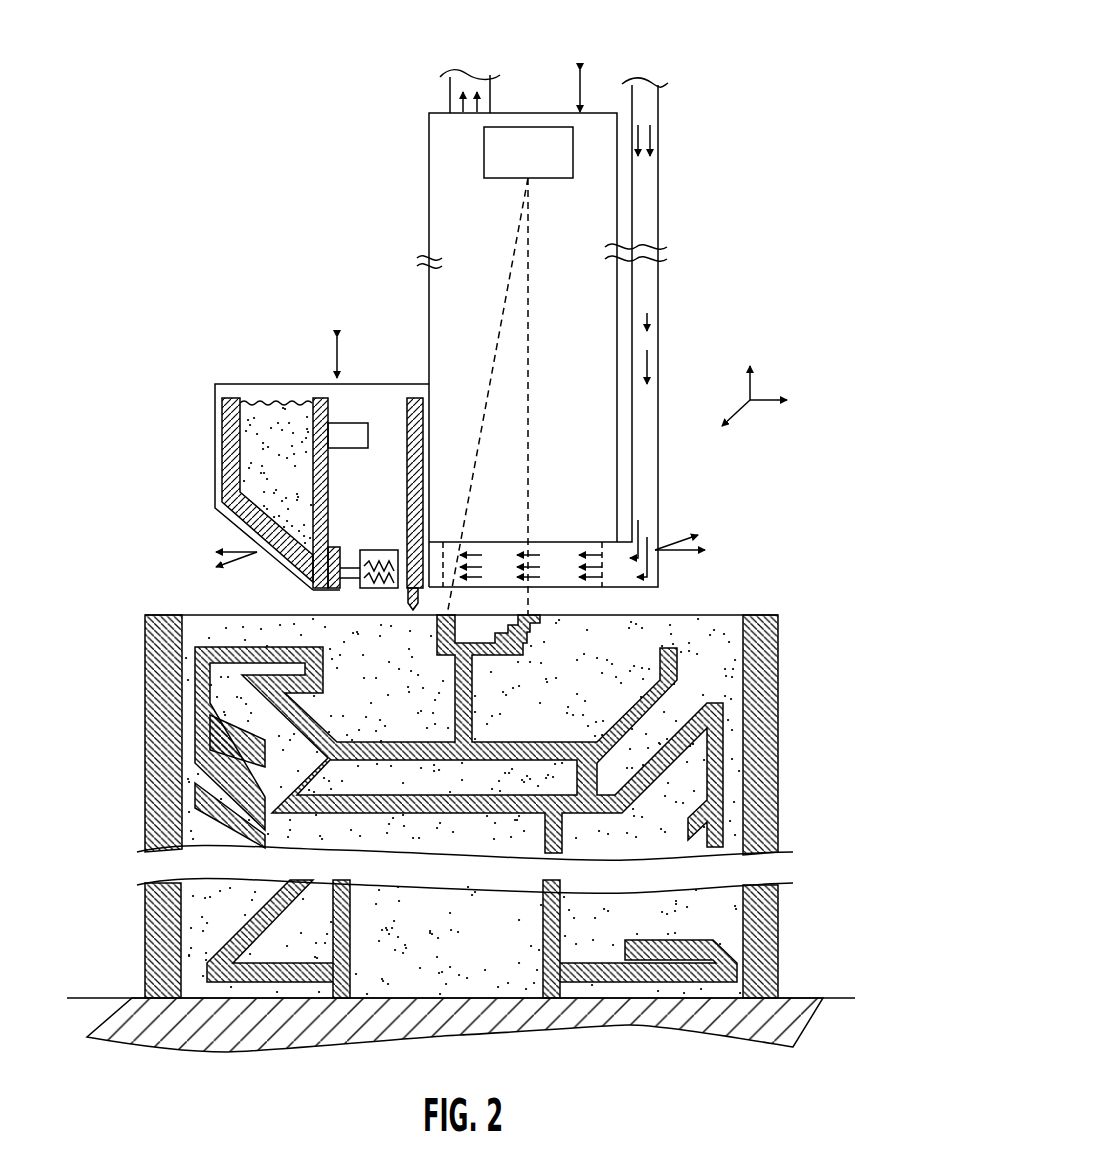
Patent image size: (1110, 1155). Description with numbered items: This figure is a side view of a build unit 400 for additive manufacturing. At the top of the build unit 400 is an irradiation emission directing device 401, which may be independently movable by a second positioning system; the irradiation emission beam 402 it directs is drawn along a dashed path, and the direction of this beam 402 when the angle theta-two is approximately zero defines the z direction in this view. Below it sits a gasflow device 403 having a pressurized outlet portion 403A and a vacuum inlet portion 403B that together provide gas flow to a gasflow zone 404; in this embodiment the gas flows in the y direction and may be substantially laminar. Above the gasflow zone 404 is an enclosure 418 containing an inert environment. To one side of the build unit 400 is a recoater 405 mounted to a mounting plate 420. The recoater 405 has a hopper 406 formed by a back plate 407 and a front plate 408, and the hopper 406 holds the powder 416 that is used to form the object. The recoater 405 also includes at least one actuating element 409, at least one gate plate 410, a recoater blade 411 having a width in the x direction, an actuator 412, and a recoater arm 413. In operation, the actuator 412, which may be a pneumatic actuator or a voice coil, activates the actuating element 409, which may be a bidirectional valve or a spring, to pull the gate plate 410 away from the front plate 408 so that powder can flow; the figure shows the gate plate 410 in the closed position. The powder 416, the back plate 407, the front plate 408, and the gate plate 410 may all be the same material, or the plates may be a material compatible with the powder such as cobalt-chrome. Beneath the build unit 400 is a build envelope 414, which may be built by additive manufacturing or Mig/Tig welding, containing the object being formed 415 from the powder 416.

The build unit 400 is at (698, 77).
The irradiation emission directing device 401 is at (528, 127).
The beam path 402 is at (528, 288).
The gasflow device 403 is at (542, 538).
The pressurized outlet portion 403A is at (610, 550).
The vacuum inlet portion 403B is at (437, 553).
The gasflow zone 404 is at (555, 550).
The recoater 405 is at (440, 292).
The hopper 406 is at (330, 385).
The back plate 407 is at (222, 442).
The front plate 408 is at (328, 415).
The actuating element 409 is at (343, 547).
The gate plate 410 is at (328, 588).
The recoater blade 411 is at (407, 593).
The actuator 412 is at (380, 549).
The recoater arm 413 is at (414, 398).
The build envelope 414 is at (461, 833).
The object being formed 415 is at (660, 665).
The powder 416 is at (250, 402).
The enclosure 418 is at (429, 185).
The mounting plate 420 is at (215, 409).